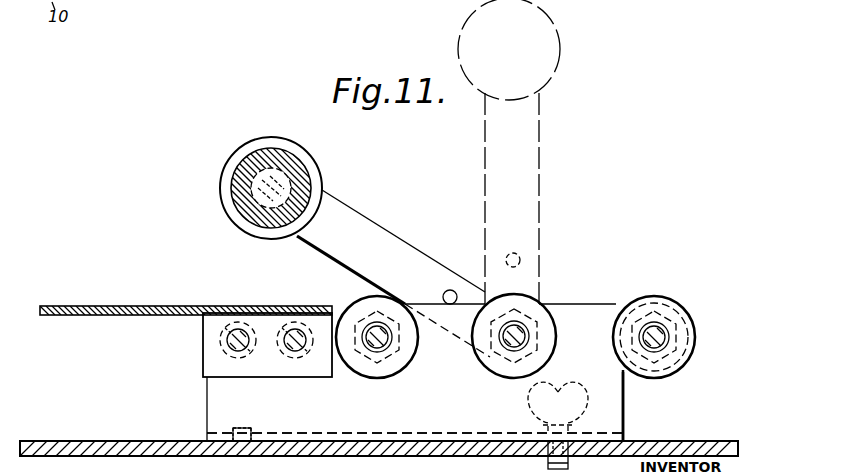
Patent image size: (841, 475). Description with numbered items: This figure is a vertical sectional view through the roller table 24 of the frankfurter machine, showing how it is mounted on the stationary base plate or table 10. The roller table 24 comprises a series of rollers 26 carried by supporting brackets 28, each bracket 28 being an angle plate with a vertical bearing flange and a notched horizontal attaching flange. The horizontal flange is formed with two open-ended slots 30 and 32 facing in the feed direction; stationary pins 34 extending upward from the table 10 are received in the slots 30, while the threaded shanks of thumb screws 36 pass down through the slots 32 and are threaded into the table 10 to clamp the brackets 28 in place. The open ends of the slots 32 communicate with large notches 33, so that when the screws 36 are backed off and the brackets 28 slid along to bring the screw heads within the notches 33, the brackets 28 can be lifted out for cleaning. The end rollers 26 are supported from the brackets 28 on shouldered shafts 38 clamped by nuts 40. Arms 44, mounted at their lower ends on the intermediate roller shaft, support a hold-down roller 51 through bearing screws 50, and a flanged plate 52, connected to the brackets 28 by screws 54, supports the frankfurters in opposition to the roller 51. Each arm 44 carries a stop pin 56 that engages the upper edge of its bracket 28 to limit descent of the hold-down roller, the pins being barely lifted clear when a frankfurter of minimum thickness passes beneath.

The base plate or table 10 is at (68, 444).
The roller table 24 is at (576, 293).
The rollers 26 is at (480, 340).
The supporting brackets 28 is at (615, 406).
The slots 30 is at (252, 436).
The slots 32 is at (575, 448).
The notches 33 is at (479, 430).
The stationary pins 34 is at (236, 428).
The thumb screws 36 is at (572, 388).
The shouldered shafts 38 is at (372, 326).
The nuts 40 is at (371, 355).
The arms 44 is at (368, 225).
The bearing screws 50 is at (232, 185).
The hold-down roller 51 is at (246, 150).
The flanged plate 52 is at (113, 306).
The screws 54 is at (282, 322).
The stop pin 56 is at (443, 296).